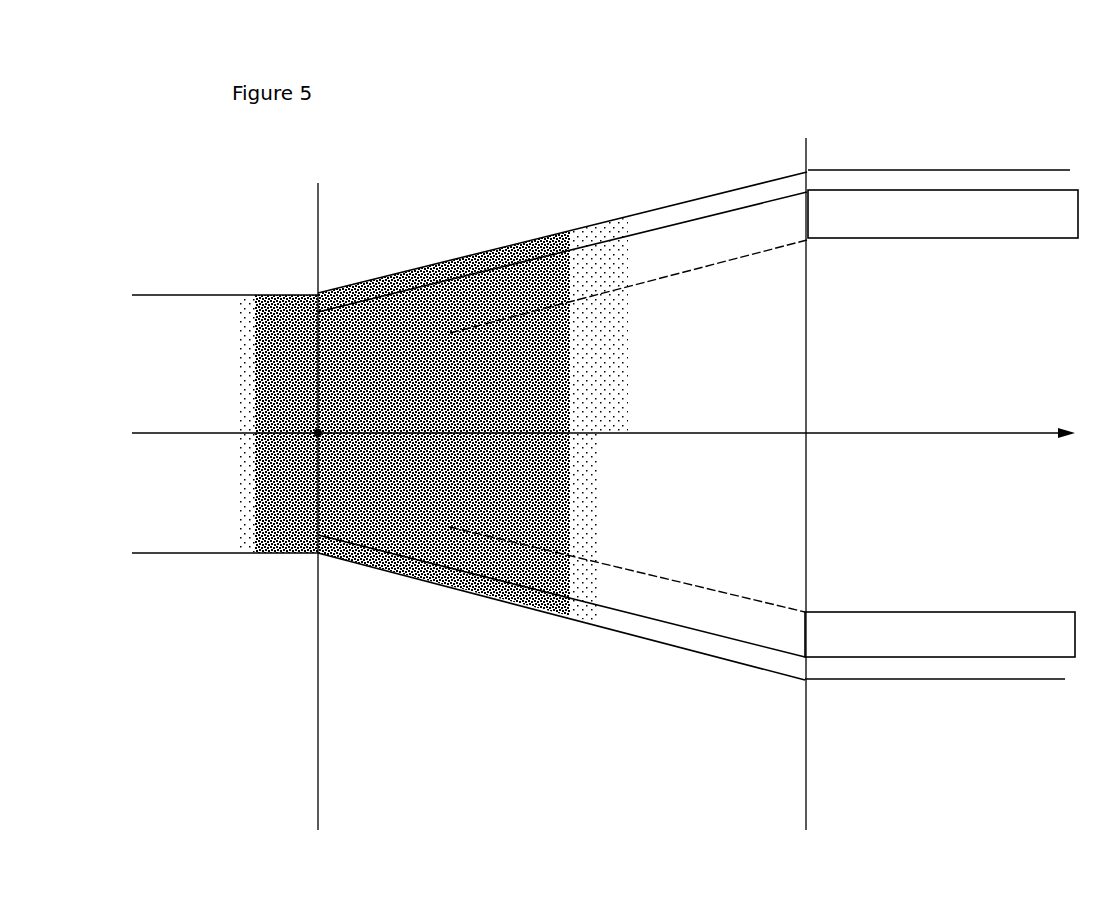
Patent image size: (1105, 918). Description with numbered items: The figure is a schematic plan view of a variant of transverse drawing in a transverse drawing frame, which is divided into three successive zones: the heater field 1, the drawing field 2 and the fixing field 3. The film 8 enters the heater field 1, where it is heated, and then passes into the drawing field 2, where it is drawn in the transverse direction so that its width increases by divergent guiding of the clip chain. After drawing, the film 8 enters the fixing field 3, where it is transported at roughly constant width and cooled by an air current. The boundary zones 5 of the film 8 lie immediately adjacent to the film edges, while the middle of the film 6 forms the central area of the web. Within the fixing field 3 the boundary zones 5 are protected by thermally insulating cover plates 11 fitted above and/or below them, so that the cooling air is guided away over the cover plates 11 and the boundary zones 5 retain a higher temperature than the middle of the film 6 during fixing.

The heater field 1 is at (225, 506).
The drawing field 2 is at (487, 722).
The fixing field 3 is at (881, 484).
The boundary zones 5 is at (502, 290).
The middle of the film 6 is at (657, 420).
The film 8 is at (287, 390).
The cover plates 11 is at (1003, 220).